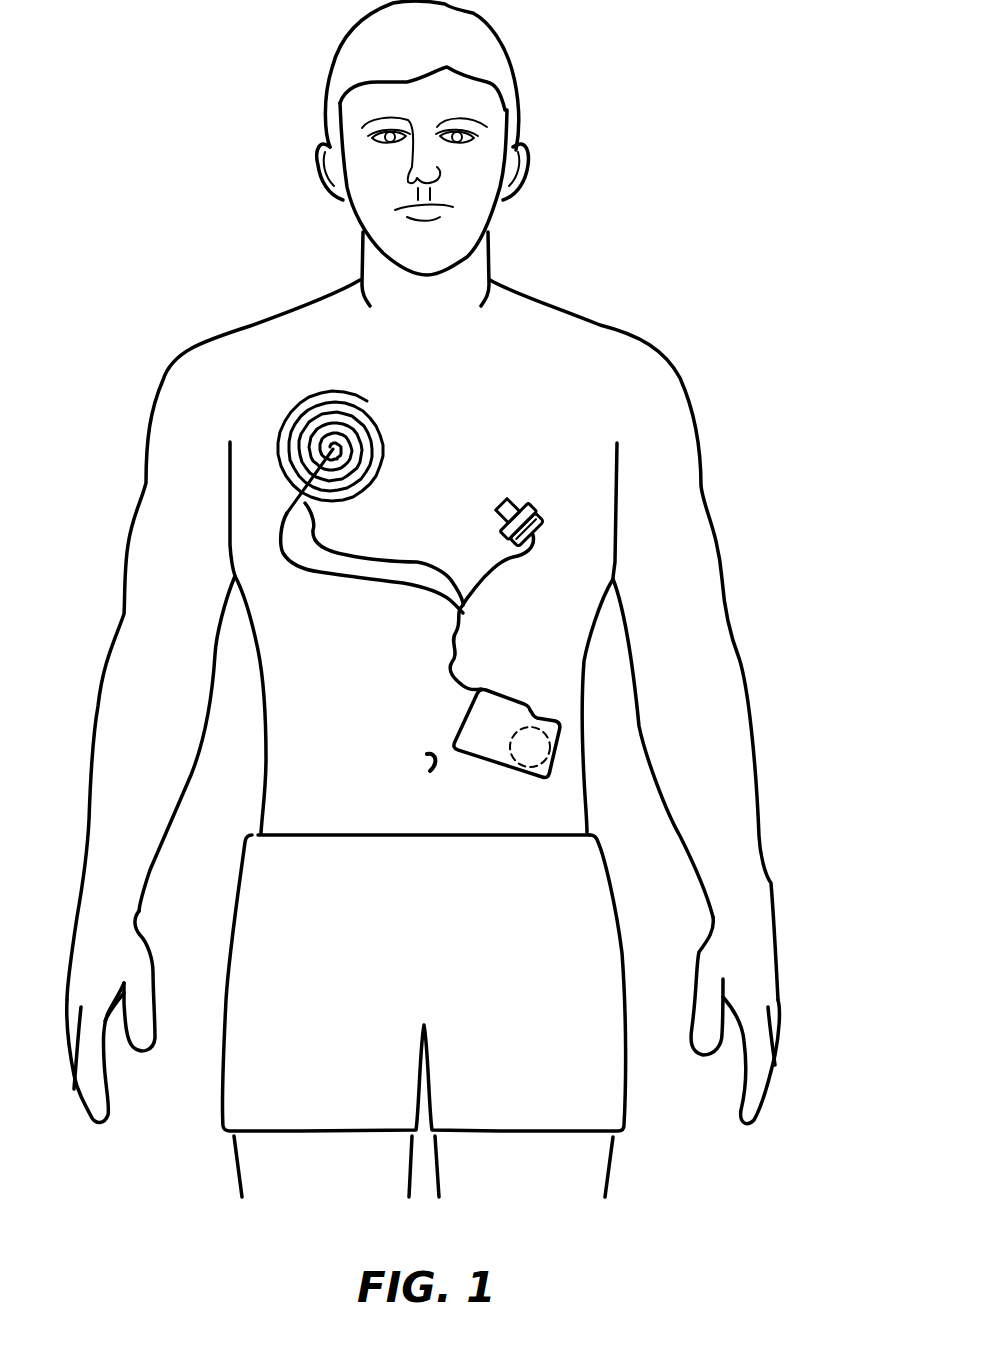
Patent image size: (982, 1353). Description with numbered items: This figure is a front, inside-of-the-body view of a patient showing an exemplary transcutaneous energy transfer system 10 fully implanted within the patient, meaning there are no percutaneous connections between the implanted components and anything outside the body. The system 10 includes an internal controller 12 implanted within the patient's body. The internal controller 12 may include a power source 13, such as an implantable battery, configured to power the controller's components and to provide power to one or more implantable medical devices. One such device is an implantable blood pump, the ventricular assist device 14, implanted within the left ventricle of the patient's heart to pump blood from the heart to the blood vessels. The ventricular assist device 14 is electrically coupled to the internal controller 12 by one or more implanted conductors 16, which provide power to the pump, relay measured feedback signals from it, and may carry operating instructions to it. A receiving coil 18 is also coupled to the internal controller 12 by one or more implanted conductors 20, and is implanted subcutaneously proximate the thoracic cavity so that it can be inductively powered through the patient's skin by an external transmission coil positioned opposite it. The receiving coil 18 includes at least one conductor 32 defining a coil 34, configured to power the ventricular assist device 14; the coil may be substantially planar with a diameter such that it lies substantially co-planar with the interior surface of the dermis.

The transcutaneous energy transfer system 10 is at (513, 452).
The internal controller 12 is at (497, 742).
The power source 13 is at (545, 738).
The ventricular assist device 14 is at (540, 503).
The implanted conductors 16 is at (490, 580).
The receiving coil 18 is at (268, 403).
The implanted conductors 20 is at (352, 580).
The conductor 32 is at (363, 397).
The coil 34 is at (331, 389).